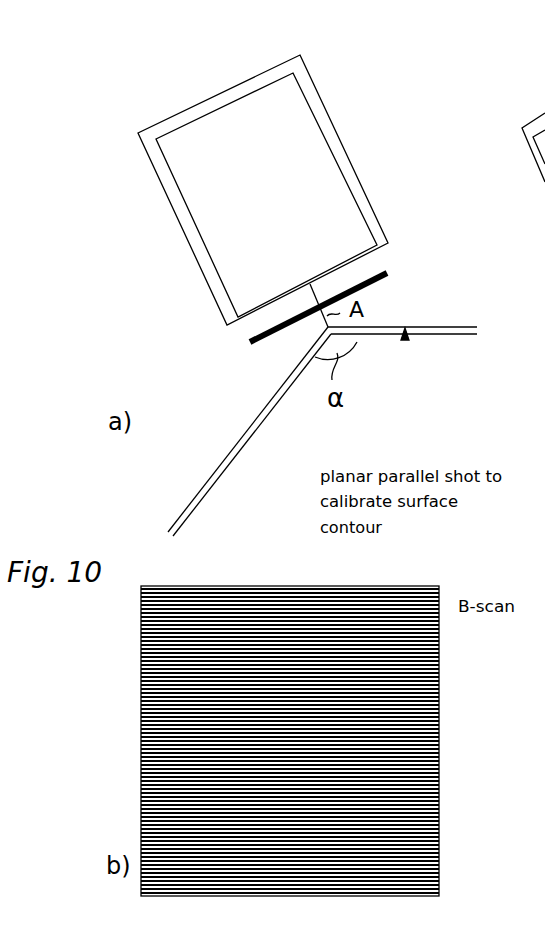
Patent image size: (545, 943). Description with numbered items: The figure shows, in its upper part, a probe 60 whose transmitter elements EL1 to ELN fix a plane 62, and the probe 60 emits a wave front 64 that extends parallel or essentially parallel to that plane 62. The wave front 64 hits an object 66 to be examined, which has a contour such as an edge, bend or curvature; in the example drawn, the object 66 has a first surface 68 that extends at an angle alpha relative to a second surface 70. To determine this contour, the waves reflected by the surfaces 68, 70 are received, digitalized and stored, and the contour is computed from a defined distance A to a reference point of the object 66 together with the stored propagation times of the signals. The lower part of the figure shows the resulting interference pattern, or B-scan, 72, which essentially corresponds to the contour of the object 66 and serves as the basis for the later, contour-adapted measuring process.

In FIG. 10a, the probe 60 is at (267, 183).
In FIG. 10a, the plane 62 is at (387, 247).
In FIG. 10a, the wave front 64 is at (382, 278).
In FIG. 10a, the object 66 is at (406, 338).
In FIG. 10a, the first surface 68 is at (453, 322).
In FIG. 10a, the second surface 70 is at (257, 421).
In FIG. 10b, the interference pattern (B-scan) 72 is at (440, 660).